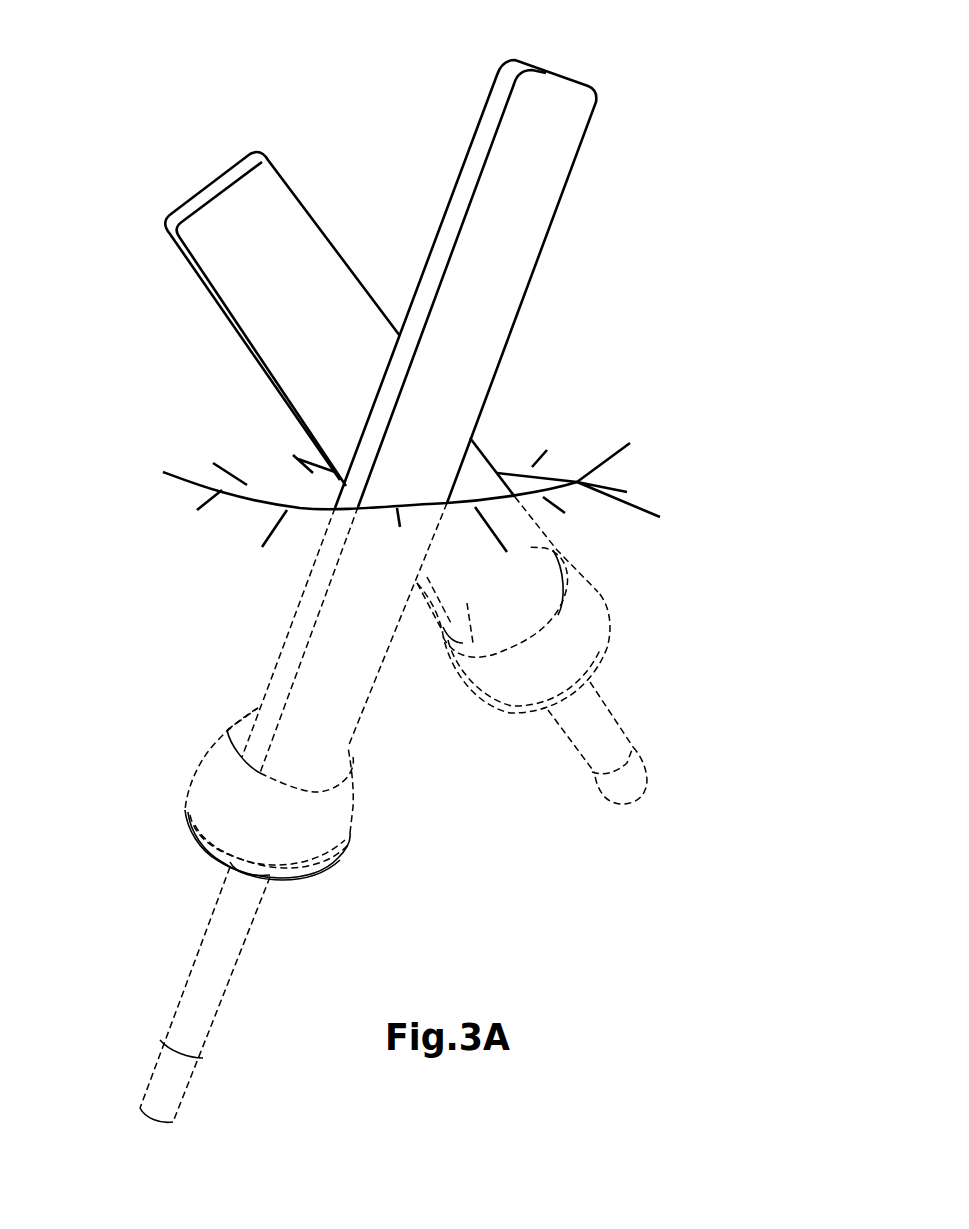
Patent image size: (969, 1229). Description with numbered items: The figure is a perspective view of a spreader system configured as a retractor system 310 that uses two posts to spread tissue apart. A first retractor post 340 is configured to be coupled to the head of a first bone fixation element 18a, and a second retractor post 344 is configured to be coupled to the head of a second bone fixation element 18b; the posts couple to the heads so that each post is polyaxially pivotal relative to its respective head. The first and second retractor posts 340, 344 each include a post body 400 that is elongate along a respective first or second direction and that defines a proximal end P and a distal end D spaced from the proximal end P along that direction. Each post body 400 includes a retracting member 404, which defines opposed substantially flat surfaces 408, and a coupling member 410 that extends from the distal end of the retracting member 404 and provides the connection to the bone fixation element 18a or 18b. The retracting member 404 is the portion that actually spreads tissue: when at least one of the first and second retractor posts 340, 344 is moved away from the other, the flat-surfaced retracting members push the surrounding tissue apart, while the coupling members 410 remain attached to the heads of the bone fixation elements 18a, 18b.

The retractor system 310 is at (93, 158).
The first retractor post 340 is at (488, 178).
The second retractor post 344 is at (295, 198).
The post body 400 is at (488, 320).
The retracting member 404 is at (320, 273).
The substantially flat surfaces 408 is at (260, 299).
The coupling member 410 is at (567, 635).
The first bone fixation element 18a is at (148, 982).
The second bone fixation element 18b is at (642, 711).
The proximal end P is at (228, 180).
The distal end D is at (603, 662).